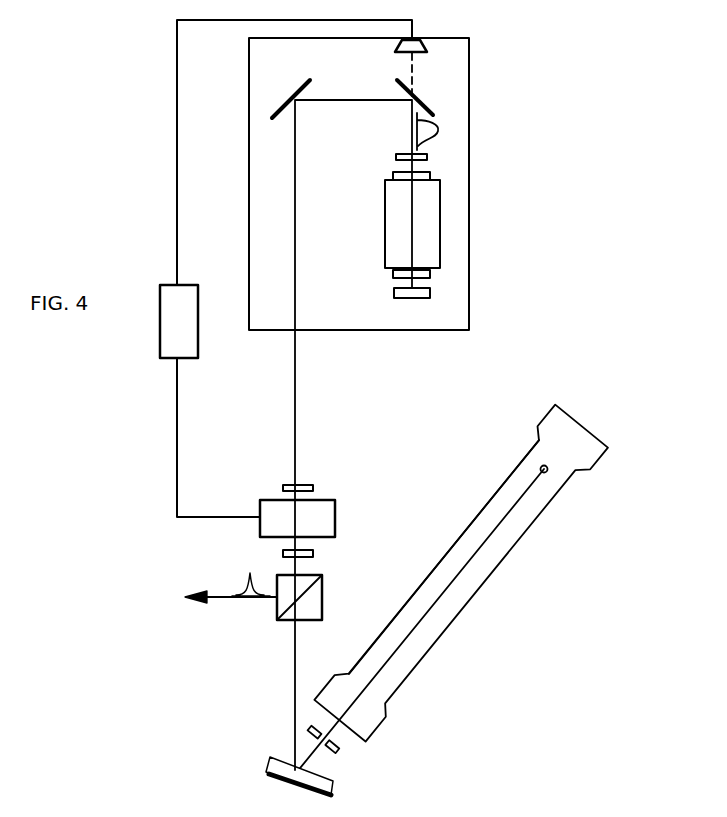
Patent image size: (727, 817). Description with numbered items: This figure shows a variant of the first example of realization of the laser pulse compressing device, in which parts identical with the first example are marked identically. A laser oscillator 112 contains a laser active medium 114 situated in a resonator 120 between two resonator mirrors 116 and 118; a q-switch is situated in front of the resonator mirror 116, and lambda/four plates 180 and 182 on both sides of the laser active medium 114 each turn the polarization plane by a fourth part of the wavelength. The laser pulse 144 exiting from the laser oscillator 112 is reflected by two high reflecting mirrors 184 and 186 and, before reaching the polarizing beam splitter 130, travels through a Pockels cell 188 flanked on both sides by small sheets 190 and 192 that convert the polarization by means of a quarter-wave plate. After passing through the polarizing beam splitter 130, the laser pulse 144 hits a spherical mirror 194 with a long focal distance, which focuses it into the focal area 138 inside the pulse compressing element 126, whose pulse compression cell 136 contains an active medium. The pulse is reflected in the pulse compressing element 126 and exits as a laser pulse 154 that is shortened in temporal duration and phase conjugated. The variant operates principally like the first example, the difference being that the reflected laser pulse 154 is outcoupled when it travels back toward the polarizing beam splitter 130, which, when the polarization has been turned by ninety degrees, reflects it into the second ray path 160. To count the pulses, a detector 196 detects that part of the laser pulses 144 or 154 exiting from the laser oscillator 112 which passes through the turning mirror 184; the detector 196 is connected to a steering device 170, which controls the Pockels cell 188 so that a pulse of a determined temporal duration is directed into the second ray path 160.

The detector 196 is at (427, 46).
The high reflecting mirror 184 is at (420, 102).
The laser pulse 144 is at (438, 133).
The resonator mirror 118 is at (427, 157).
The lambda/four plate 182 is at (430, 176).
The laser active medium 114 is at (427, 197).
The laser oscillator 112 is at (452, 225).
The resonator 120 is at (452, 250).
The lambda/four plate 180 is at (430, 274).
The resonator mirror 116 is at (430, 293).
The high reflecting mirror 186 is at (306, 82).
The steering device 170 is at (184, 288).
The small sheet 190 is at (313, 487).
The Pockels cell 188 is at (322, 518).
The small sheet 192 is at (313, 553).
The polarizing beam splitter 130 is at (313, 596).
The second ray path 160 is at (215, 597).
The laser pulse 154 is at (250, 578).
The spherical mirror 194 is at (268, 762).
The pulse compressing element 126 is at (488, 578).
The pulse compression cell 136 is at (435, 630).
The focal area 138 is at (546, 472).